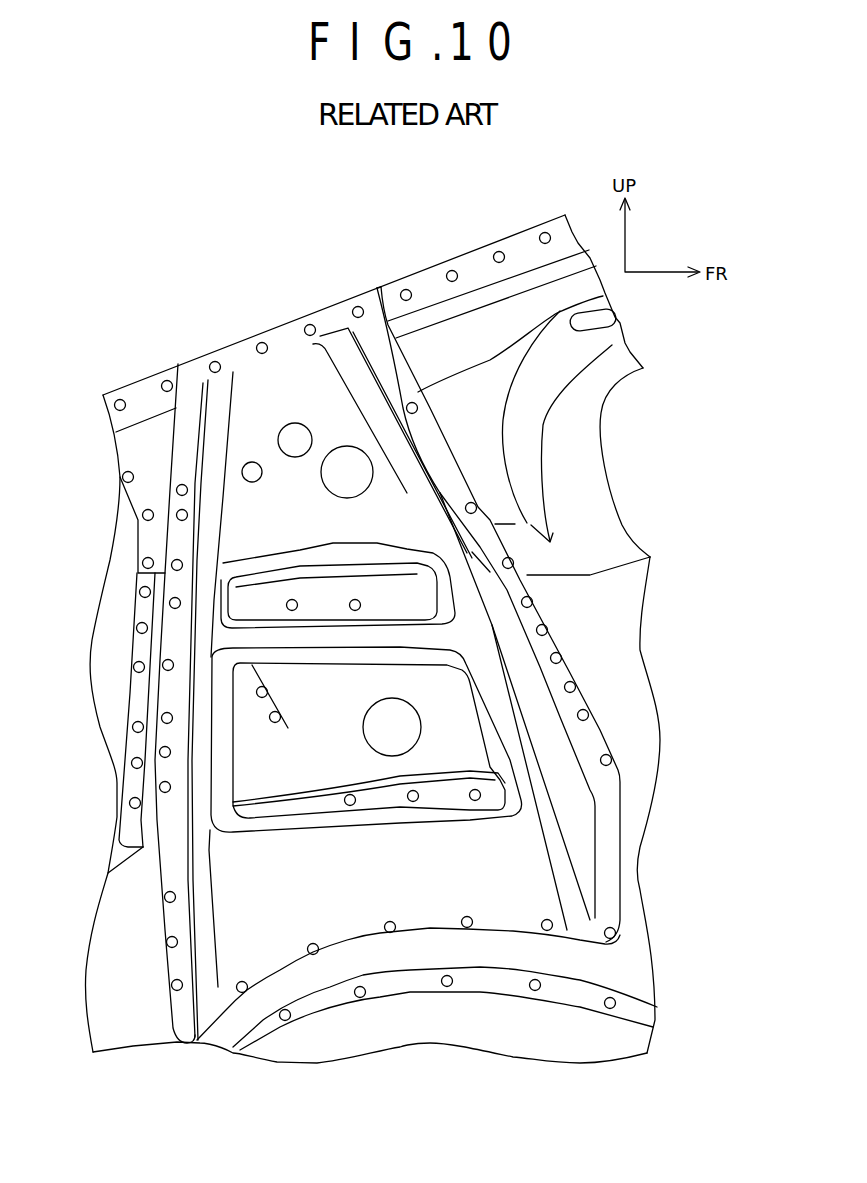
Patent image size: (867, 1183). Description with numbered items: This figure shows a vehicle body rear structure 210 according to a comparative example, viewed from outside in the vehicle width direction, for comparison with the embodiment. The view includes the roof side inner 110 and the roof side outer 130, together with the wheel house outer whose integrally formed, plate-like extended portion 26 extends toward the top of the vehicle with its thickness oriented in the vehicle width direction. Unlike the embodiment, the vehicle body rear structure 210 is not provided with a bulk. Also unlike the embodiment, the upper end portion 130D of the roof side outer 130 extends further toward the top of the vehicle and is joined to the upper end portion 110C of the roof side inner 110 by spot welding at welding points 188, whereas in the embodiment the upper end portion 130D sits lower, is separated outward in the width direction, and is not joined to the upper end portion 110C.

The vehicle body rear structure 210 is at (360, 221).
The welding points 188 is at (212, 362).
The roof side outer 130 is at (290, 318).
The upper end portion of the roof side outer 130D is at (213, 362).
The upper end portion of the roof side inner 110C is at (358, 306).
The roof side inner 110 is at (421, 266).
The extended portion 26 is at (622, 652).